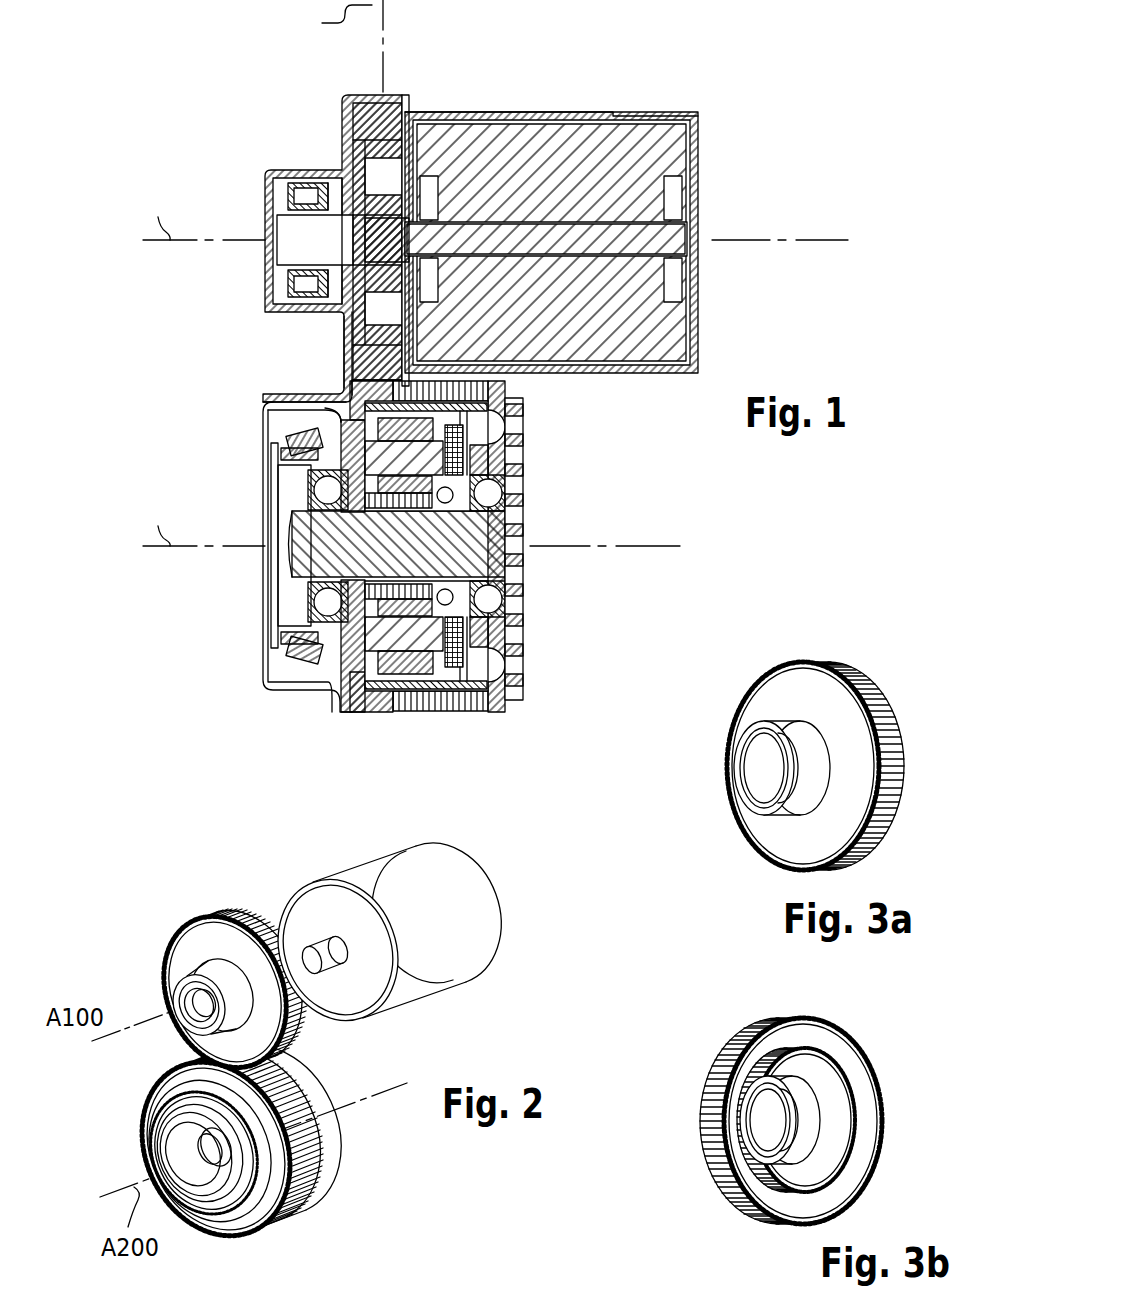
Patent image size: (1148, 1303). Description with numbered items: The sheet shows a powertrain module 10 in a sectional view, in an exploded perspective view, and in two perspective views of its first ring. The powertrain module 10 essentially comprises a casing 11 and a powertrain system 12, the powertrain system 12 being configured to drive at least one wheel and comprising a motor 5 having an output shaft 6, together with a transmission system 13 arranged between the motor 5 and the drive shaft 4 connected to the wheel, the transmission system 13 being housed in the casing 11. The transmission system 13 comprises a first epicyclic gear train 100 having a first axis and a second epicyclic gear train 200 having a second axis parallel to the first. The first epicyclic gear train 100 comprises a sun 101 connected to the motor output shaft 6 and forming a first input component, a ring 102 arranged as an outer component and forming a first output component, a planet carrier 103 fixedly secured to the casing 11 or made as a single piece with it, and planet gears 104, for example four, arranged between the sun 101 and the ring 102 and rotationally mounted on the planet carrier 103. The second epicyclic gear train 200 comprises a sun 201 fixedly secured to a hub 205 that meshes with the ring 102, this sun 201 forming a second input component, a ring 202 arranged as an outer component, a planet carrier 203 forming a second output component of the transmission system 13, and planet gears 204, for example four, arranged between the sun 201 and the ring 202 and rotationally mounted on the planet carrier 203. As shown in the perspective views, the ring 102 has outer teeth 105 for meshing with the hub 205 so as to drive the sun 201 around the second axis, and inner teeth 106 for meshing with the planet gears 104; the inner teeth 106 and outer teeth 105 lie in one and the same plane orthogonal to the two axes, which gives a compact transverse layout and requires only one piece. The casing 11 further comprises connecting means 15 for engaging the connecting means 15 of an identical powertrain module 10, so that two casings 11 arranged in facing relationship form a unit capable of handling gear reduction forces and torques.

In FIG. 1, the drive shaft 4 is at (488, 545).
In FIG. 1, the motor 5 is at (657, 117).
In FIG. 2, the motor 5 is at (440, 973).
In FIG. 1, the output shaft 6 is at (420, 246).
In FIG. 2, the output shaft 6 is at (318, 946).
In FIG. 1, the powertrain module 10 is at (485, 396).
In FIG. 1, the casing 11 is at (500, 705).
In FIG. 1, the powertrain system 12 is at (590, 214).
In FIG. 2, the powertrain system 12 is at (265, 1150).
In FIG. 2, the transmission system 13 is at (265, 1040).
In FIG. 1, the connecting means 15 is at (527, 565).
In FIG. 1, the first epicyclic gear train 100 is at (300, 141).
In FIG. 2, the first epicyclic gear train 100 is at (192, 982).
In FIG. 1, the sun 101 is at (412, 252).
In FIG. 1, the ring 102 is at (377, 118).
In FIG. 2, the ring 102 is at (186, 948).
In FIG. 3A, the ring 102 is at (809, 759).
In FIG. 3B, the ring 102 is at (787, 1145).
In FIG. 1, the planet carrier 103 is at (343, 323).
In FIG. 1, the planet gears 104 is at (407, 124).
In FIG. 3A, the outer teeth 105 is at (857, 674).
In FIG. 3B, the outer teeth 105 is at (878, 1084).
In FIG. 3B, the inner teeth 106 is at (850, 1165).
In FIG. 1, the second epicyclic gear train 200 is at (419, 579).
In FIG. 2, the second epicyclic gear train 200 is at (208, 1150).
In FIG. 1, the sun 201 is at (338, 688).
In FIG. 1, the ring 202 is at (462, 682).
In FIG. 1, the planet carrier 203 is at (432, 652).
In FIG. 1, the planet gears 204 is at (352, 403).
In FIG. 1, the hub 205 is at (377, 702).
In FIG. 2, the hub 205 is at (279, 1228).